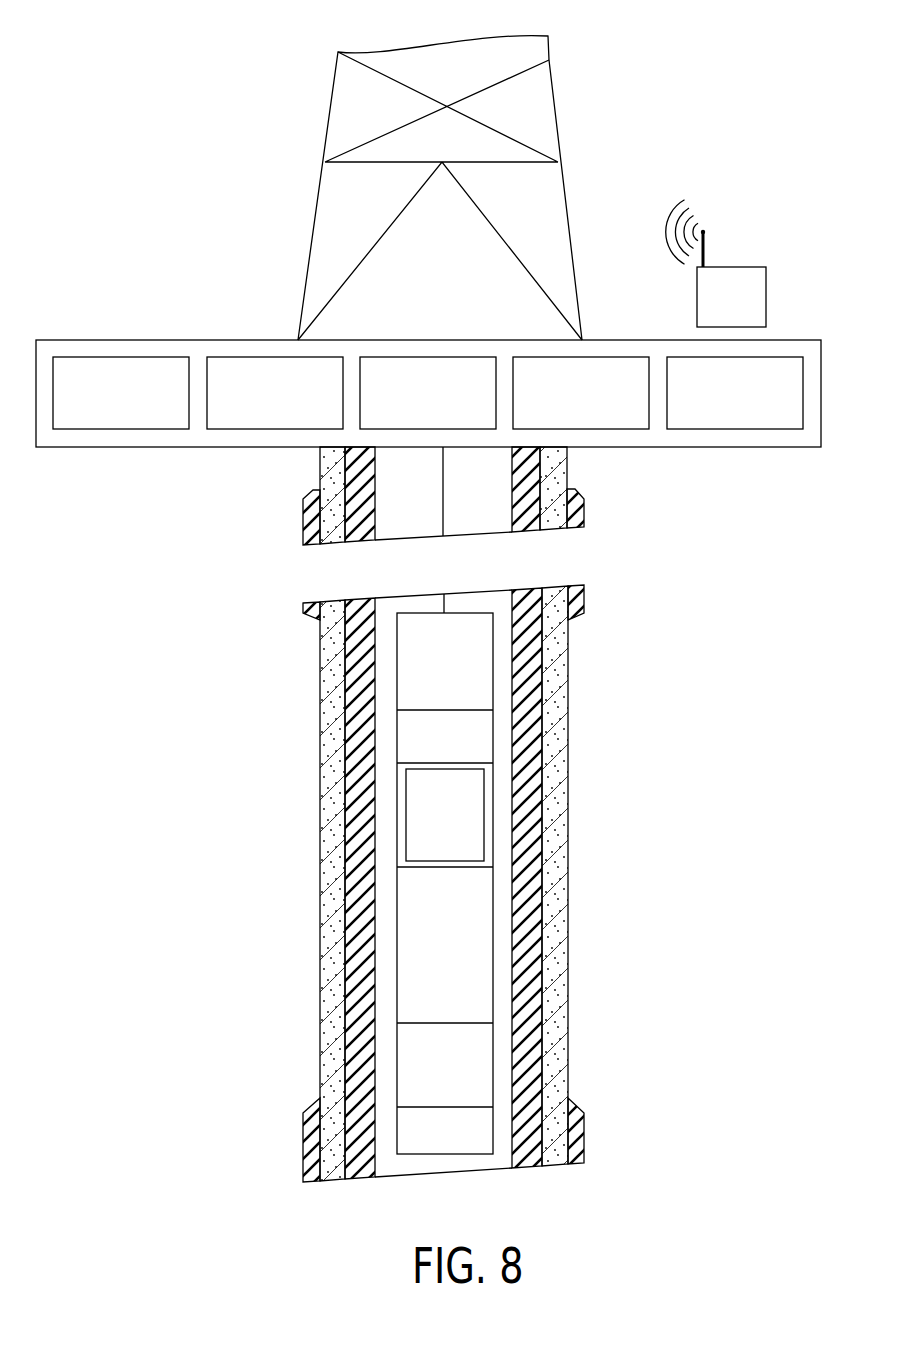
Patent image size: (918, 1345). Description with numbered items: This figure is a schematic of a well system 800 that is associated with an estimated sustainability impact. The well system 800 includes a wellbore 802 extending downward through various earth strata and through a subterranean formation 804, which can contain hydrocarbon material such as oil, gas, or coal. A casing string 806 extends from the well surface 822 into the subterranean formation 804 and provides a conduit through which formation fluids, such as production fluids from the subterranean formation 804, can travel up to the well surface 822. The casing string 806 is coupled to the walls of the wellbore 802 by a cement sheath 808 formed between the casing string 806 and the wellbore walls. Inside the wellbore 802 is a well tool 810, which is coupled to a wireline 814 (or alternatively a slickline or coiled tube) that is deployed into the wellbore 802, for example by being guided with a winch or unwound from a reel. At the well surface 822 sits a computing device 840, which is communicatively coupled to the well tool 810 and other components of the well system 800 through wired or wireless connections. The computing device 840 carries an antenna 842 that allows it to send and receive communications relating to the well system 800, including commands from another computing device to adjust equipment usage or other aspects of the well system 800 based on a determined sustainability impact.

The well system 800 is at (167, 162).
The wellbore 802 is at (567, 462).
The subterranean formation 804 is at (584, 512).
The casing string 806 is at (358, 695).
The cement sheath 808 is at (328, 752).
The well tool 810 is at (403, 668).
The wireline 814 is at (443, 533).
The well surface 822 is at (445, 338).
The computing device 840 is at (767, 300).
The antenna 842 is at (705, 252).